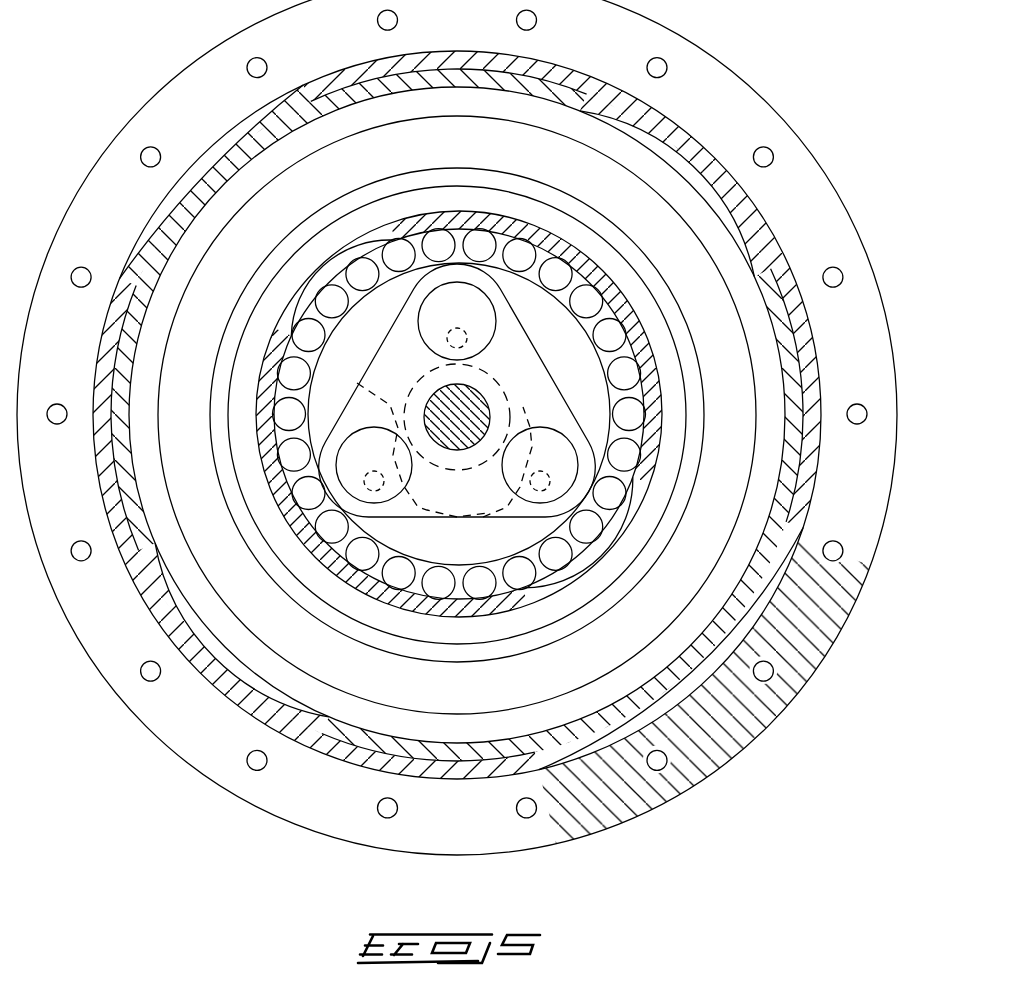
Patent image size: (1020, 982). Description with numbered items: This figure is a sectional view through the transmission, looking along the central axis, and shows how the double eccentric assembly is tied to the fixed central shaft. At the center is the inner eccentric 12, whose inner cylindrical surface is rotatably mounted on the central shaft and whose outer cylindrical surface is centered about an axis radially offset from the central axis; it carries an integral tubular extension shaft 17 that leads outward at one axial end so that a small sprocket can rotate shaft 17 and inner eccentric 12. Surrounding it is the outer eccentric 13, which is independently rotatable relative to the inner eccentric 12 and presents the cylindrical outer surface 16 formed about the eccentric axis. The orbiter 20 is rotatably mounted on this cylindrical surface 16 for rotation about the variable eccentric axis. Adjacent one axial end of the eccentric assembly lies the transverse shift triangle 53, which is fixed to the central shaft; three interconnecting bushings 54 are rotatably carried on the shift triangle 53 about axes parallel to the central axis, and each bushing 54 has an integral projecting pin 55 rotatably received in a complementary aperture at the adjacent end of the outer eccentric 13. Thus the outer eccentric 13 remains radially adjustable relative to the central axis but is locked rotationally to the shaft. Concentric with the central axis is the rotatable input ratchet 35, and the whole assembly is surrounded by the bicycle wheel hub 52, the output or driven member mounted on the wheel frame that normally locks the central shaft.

The inner eccentric 12 is at (362, 385).
The outer eccentric 13 is at (446, 555).
The cylindrical outer surface 16 is at (583, 358).
The tubular extension shaft 17 is at (520, 407).
The orbiter 20 is at (490, 163).
The input ratchet 35 is at (591, 107).
The bicycle wheel hub 52 is at (722, 118).
The shift triangle 53 is at (494, 366).
The bushing 54 is at (433, 312).
The projecting pin 55 is at (425, 356).